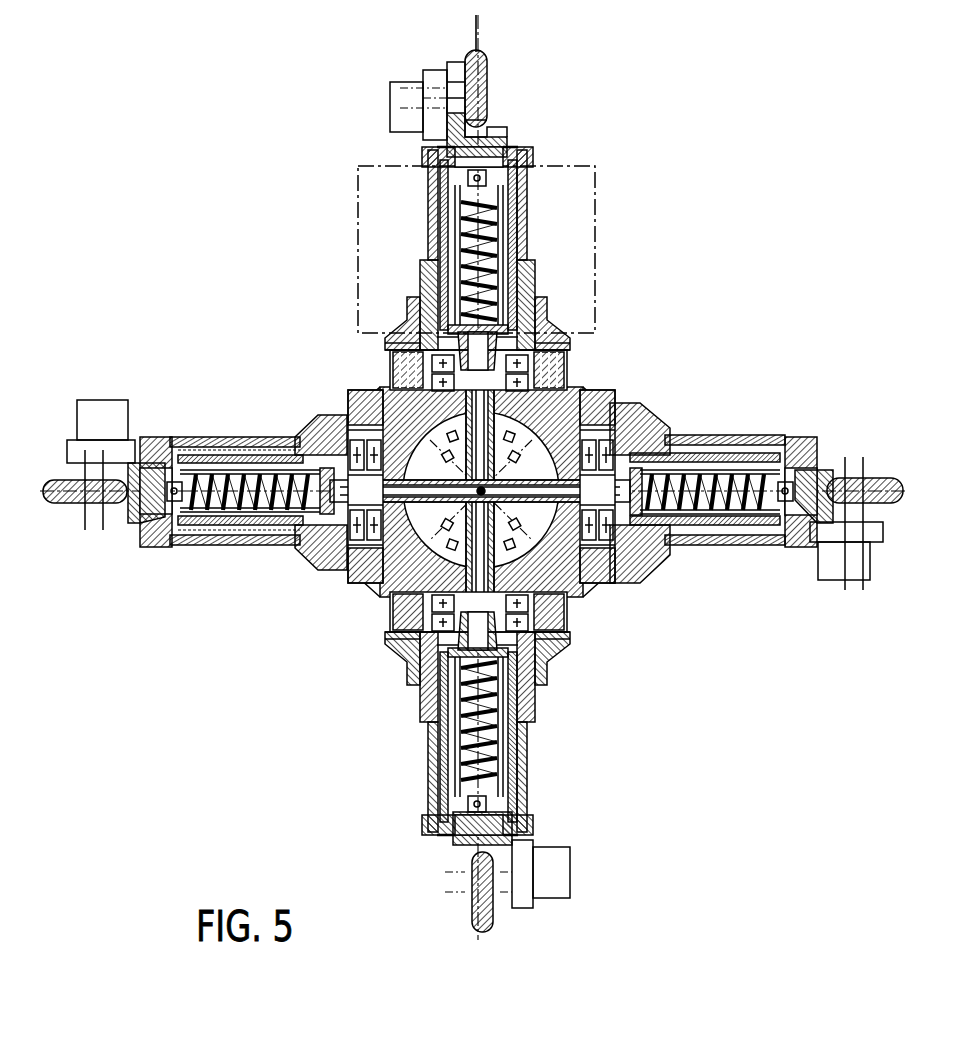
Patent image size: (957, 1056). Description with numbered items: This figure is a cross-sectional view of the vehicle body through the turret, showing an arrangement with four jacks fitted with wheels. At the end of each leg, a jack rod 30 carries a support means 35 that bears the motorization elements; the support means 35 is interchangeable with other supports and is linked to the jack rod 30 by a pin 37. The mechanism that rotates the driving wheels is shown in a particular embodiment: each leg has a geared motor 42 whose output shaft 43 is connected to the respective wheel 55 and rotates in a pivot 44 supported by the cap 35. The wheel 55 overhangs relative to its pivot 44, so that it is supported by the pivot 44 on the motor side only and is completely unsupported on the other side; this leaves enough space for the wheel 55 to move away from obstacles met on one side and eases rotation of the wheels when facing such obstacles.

The jack rod 30 is at (500, 217).
The support means 35 is at (483, 128).
The pin 37 is at (483, 147).
The geared motor 42 is at (437, 77).
The output shaft 43 is at (487, 77).
The pivot 44 is at (458, 66).
The wheel 55 is at (483, 50).